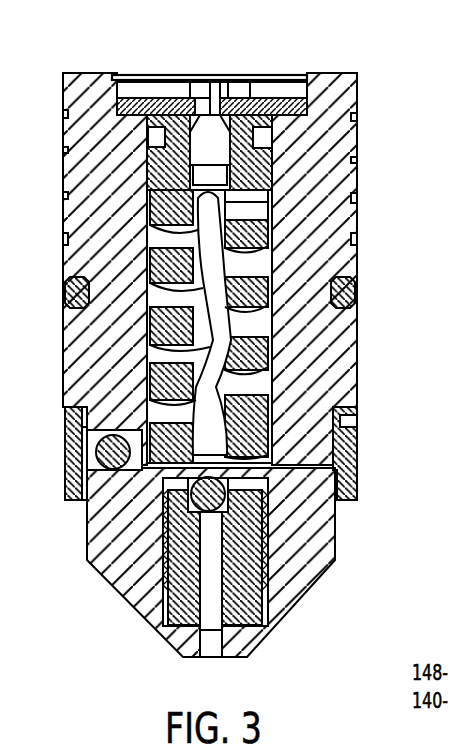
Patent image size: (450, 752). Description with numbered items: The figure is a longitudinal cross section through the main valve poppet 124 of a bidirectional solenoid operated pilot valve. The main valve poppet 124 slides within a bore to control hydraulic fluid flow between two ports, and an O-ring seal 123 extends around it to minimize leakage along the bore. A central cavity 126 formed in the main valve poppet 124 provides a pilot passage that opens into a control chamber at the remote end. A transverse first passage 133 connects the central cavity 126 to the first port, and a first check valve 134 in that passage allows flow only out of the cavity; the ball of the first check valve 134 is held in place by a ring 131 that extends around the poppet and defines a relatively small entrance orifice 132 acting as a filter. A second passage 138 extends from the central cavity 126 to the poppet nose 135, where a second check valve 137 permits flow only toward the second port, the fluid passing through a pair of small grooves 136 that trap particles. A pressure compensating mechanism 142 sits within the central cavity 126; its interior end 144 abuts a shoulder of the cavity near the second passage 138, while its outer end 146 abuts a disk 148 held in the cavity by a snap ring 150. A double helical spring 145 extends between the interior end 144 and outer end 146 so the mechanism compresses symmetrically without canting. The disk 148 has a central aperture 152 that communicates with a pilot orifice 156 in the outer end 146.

The O-ring seal 123 is at (357, 292).
The main valve poppet 124 is at (360, 215).
The central cavity 126 is at (272, 327).
The ring 131 is at (64, 482).
The entrance orifice 132 is at (85, 503).
The first passage 133 is at (128, 505).
The first check valve 134 is at (118, 470).
The poppet nose 135 is at (245, 656).
The small grooves 136 is at (210, 541).
The second check valve 137 is at (226, 500).
The second passage 138 is at (235, 483).
The pressure compensating mechanism 142 is at (262, 175).
The interior end 144 is at (345, 400).
The double helical spring 145 is at (272, 240).
The outer end 146 is at (262, 120).
The disk 148 is at (263, 82).
The snap ring 150 is at (292, 78).
The central aperture 152 is at (220, 80).
The pilot orifice 156 is at (212, 80).